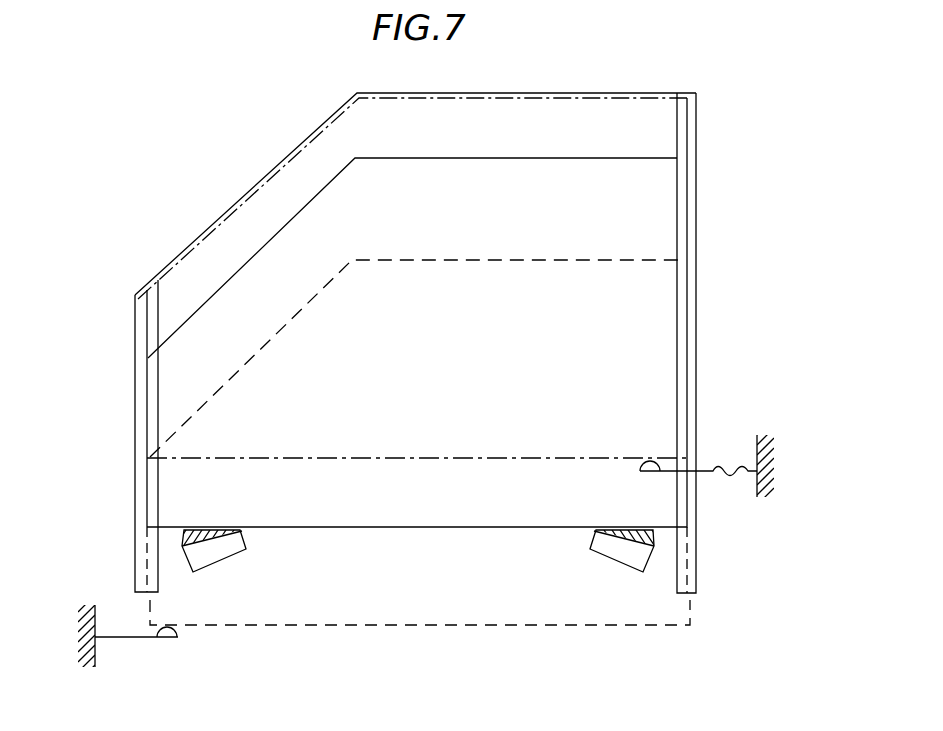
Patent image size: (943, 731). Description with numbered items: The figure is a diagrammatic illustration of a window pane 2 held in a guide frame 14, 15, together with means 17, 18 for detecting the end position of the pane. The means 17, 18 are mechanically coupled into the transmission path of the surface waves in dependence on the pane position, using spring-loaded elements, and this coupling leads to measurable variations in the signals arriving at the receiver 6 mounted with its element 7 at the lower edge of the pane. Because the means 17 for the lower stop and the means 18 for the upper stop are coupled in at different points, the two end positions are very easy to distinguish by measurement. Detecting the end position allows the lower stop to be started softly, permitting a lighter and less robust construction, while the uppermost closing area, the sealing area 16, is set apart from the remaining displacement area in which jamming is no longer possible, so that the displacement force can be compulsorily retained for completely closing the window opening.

The window pane 2 is at (413, 193).
The receiver 6 is at (242, 550).
The magnet holder 7 is at (187, 532).
The guide frame 14 is at (150, 310).
The guide frame 15 is at (690, 132).
The sealing area 16 is at (583, 92).
The means for detecting the end position 17 is at (135, 650).
The means for detecting the end position 18 is at (721, 446).